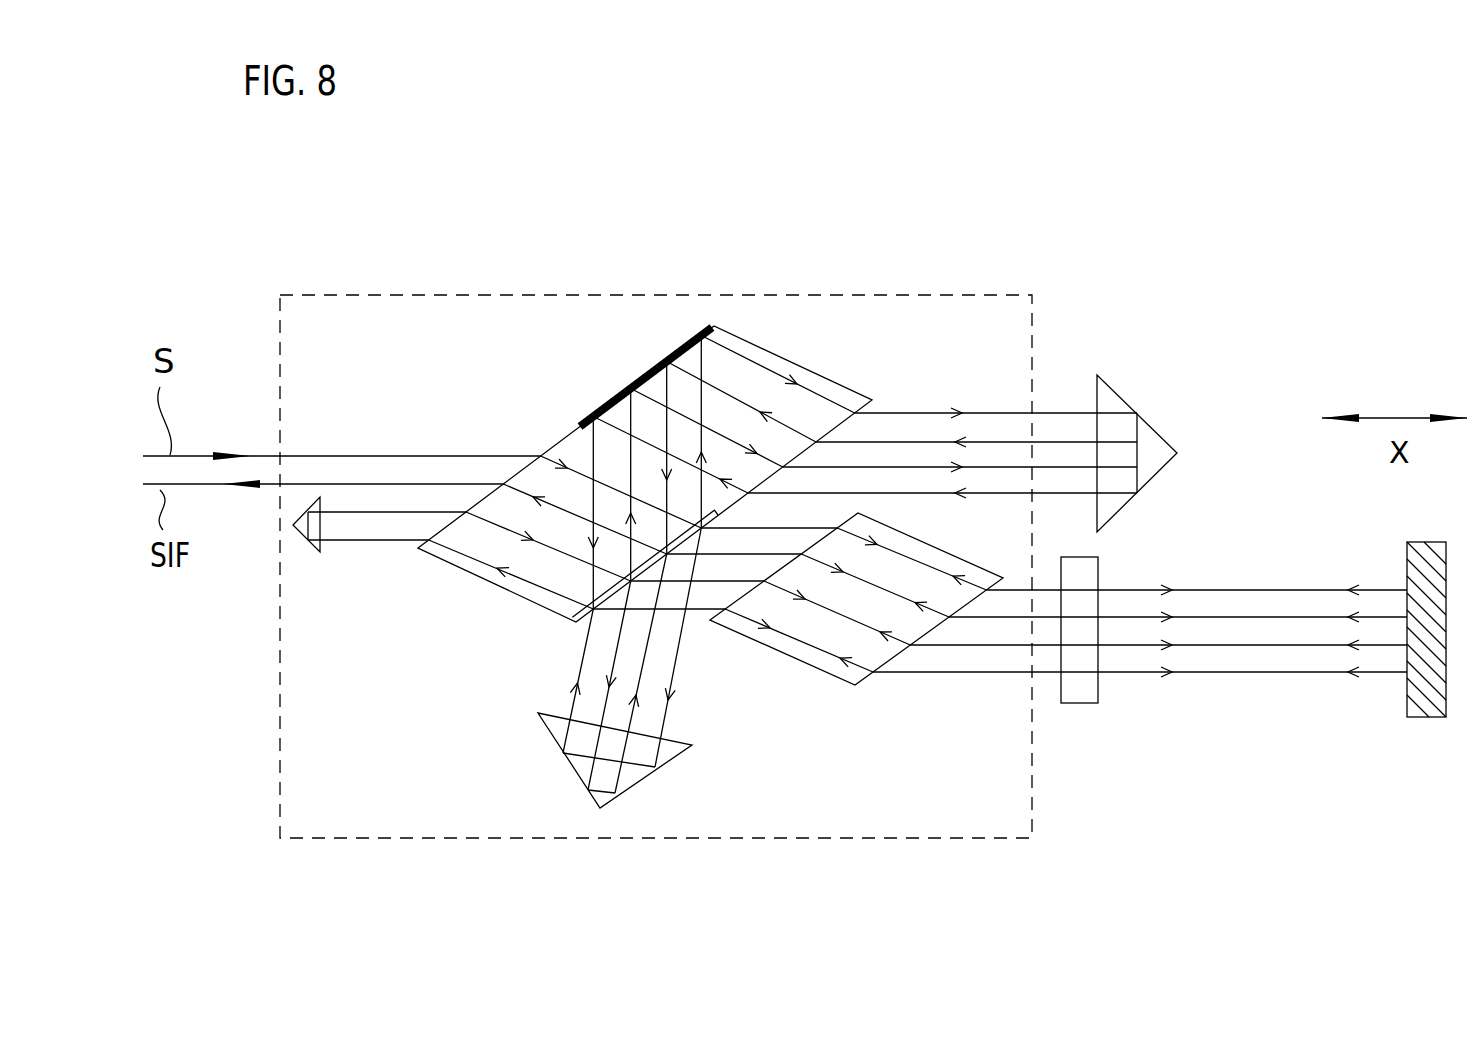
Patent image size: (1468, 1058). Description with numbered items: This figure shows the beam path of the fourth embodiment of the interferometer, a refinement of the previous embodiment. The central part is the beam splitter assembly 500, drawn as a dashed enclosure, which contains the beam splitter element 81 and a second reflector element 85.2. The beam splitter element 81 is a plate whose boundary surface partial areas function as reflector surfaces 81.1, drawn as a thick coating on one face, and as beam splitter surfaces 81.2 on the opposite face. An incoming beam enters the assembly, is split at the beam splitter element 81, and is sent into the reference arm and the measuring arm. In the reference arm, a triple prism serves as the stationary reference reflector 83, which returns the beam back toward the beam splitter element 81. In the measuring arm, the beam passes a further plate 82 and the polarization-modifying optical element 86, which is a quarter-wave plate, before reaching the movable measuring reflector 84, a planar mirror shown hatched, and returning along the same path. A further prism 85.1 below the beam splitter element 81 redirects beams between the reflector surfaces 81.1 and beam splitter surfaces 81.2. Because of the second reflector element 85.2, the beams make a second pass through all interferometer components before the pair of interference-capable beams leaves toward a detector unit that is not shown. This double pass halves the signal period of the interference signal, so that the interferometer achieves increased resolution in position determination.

The beam splitter assembly 500 is at (462, 840).
The beam splitter element 81 is at (645, 451).
The reflector surface 81.1 is at (647, 367).
The beam splitter surface 81.2 is at (607, 595).
The compensating plate 82 is at (878, 697).
The stationary reference reflector 83 is at (1127, 402).
The movable measuring reflector 84 is at (1410, 695).
The retroreflecting prism 85.1 is at (690, 762).
The second reflector element 85.2 is at (317, 547).
The polarization-modifying optical element 86 is at (1078, 692).